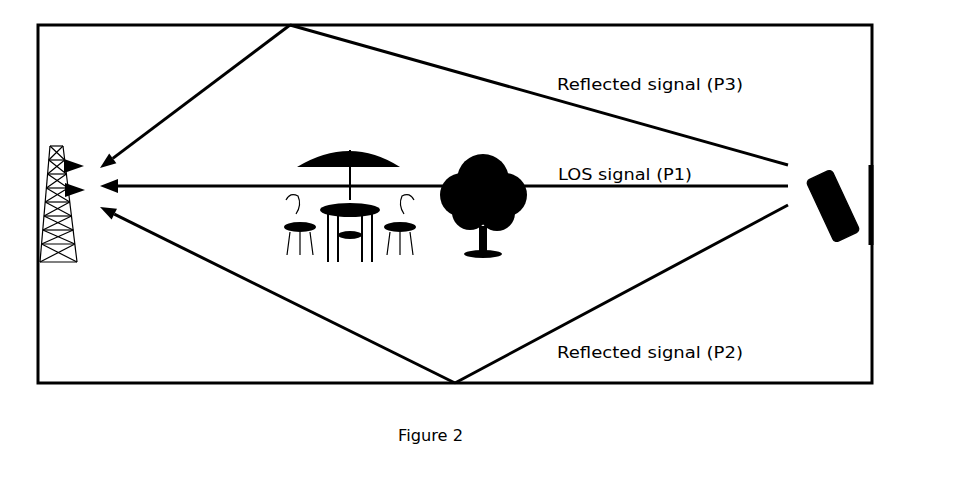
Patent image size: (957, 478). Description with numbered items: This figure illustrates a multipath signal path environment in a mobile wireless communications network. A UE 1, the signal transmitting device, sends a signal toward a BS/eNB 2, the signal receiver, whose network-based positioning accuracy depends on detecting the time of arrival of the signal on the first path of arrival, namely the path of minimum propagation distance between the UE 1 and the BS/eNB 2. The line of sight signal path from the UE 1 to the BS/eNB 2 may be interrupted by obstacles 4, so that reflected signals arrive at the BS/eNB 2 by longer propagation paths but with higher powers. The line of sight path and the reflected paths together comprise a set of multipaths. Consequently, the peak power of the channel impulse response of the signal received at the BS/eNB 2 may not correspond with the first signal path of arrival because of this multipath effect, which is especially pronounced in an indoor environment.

The UE 1 is at (826, 173).
The BS/eNB 2 is at (57, 148).
The obstacles 4 is at (535, 143).